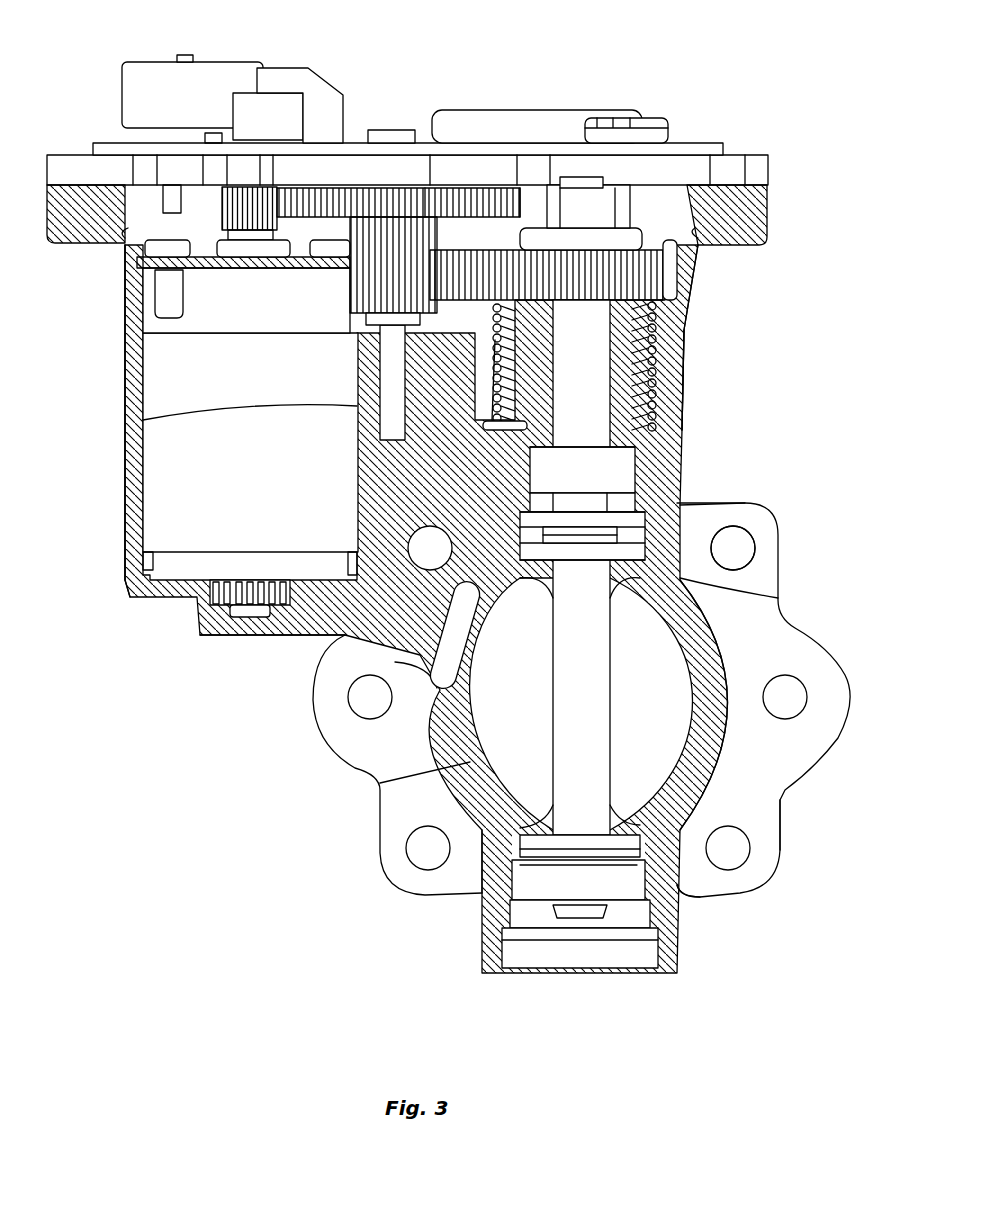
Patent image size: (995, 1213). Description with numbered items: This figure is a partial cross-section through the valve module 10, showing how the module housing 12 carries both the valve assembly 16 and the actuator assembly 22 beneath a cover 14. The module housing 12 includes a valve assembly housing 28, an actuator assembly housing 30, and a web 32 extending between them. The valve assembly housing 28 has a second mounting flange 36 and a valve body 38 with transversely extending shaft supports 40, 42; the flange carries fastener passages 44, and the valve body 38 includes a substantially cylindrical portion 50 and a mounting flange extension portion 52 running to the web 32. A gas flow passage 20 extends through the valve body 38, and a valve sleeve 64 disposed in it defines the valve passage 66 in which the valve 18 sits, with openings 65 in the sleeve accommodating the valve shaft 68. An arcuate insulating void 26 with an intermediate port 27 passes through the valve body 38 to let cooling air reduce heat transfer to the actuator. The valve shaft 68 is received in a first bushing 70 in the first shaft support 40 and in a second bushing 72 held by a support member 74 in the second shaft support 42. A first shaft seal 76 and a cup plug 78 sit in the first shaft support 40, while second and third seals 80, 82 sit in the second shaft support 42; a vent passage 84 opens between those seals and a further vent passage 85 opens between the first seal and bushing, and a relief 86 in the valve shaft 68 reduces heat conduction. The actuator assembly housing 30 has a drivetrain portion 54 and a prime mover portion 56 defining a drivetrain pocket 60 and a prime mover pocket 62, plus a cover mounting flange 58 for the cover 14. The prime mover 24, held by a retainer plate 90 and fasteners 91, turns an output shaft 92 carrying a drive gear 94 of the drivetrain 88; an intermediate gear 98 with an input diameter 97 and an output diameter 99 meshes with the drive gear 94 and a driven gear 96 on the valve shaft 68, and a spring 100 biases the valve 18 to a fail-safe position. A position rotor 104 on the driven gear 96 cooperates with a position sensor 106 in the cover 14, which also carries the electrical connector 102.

The valve module 10 is at (242, 805).
The module housing 12 is at (165, 617).
The cover 14 is at (748, 155).
The valve assembly 16 is at (770, 893).
The valve 18 is at (581, 704).
The gas flow passage 20 is at (380, 786).
The actuator assembly 22 is at (126, 520).
The prime mover 24 is at (250, 421).
The insulating void 26 is at (457, 648).
The intermediate port 27 is at (396, 662).
The valve assembly housing 28 is at (708, 648).
The actuator assembly housing 30 is at (123, 366).
The web 32 is at (380, 487).
The second mounting flange 36 is at (378, 855).
The valve body 38 is at (778, 596).
The first shaft support 40 is at (668, 923).
The second shaft support 42 is at (637, 513).
The fastener passages 44 is at (826, 562).
The substantially cylindrical portion 50 is at (743, 787).
The mounting flange extension portion 52 is at (438, 587).
The drivetrain portion 54 is at (668, 400).
The prime mover portion 56 is at (123, 366).
The cover mounting flange 58 is at (72, 210).
The drivetrain pocket 60 is at (128, 236).
The prime mover pocket 62 is at (150, 433).
The valve sleeve 64 is at (495, 798).
The openings 65 is at (615, 597).
The valve passage 66 is at (712, 740).
The valve shaft 68 is at (581, 567).
The first bushing 70 is at (625, 890).
The second bushing 72 is at (620, 472).
The support member 74 is at (635, 447).
The first shaft seal 76 is at (627, 843).
The cup plug 78 is at (545, 955).
The second seal 80 is at (640, 552).
The third seal 82 is at (640, 520).
The vent passage 84 is at (640, 530).
The vent passage 85 is at (665, 880).
The relief 86 is at (755, 538).
The drivetrain 88 is at (212, 220).
The retainer plate 90 is at (143, 266).
The fasteners 91 is at (160, 305).
The output shaft 92 is at (245, 240).
The drive gear 94 is at (222, 205).
The driven gear 96 is at (663, 293).
The input diameter 97 is at (520, 205).
The intermediate gear 98 is at (338, 193).
The output diameter 99 is at (447, 235).
The spring 100 is at (668, 363).
The electrical connector 102 is at (158, 62).
The position rotor 104 is at (656, 185).
The position sensor 106 is at (593, 178).